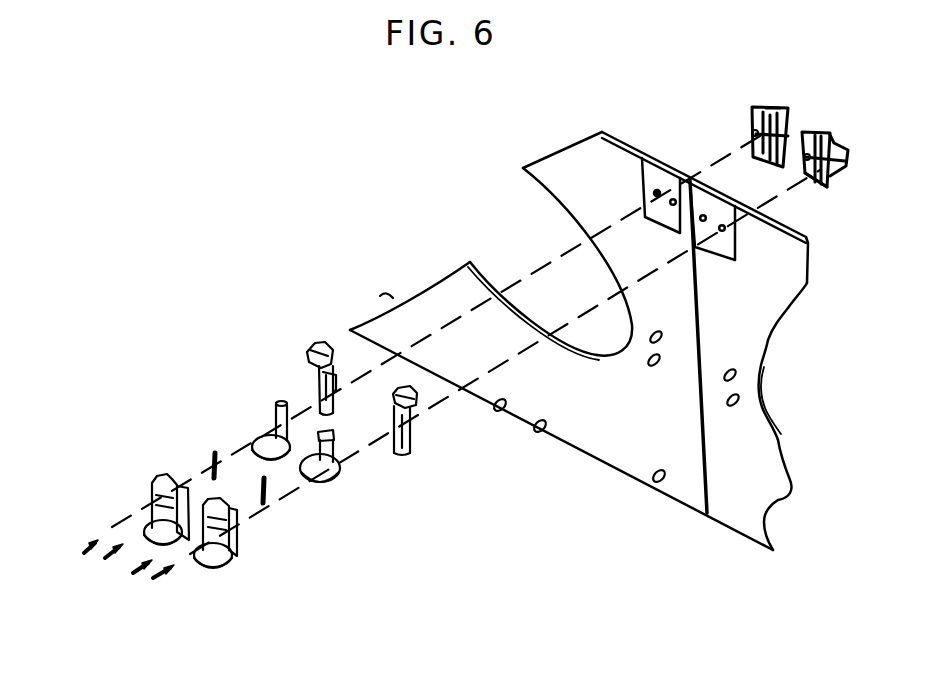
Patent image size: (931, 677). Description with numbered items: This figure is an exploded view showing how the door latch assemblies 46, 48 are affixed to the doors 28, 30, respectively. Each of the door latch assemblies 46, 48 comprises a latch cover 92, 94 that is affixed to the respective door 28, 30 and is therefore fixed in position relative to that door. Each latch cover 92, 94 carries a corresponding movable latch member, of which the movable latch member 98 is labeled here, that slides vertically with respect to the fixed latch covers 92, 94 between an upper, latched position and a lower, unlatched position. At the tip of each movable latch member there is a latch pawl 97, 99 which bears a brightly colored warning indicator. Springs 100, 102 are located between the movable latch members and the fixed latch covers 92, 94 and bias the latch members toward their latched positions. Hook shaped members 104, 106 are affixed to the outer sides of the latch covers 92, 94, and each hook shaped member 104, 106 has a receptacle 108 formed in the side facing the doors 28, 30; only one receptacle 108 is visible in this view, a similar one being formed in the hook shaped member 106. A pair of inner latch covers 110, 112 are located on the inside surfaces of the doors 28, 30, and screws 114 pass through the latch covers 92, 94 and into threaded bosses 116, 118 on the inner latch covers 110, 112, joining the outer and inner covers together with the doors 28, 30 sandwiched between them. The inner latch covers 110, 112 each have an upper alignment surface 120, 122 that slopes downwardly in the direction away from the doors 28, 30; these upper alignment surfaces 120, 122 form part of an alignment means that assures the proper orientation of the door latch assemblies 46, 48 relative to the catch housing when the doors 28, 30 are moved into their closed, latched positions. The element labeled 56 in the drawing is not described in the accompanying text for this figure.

The door 28 is at (573, 167).
The door 30 is at (768, 283).
The door latch assembly 46 is at (173, 367).
The door latch assembly 48 is at (378, 525).
The bolt 56 is at (240, 396).
The latch cover 92 is at (150, 493).
The latch cover 94 is at (230, 550).
The latch pawl 97 is at (273, 405).
The movable latch member 98 is at (370, 476).
The latch pawl 99 is at (334, 440).
The spring 100 is at (203, 460).
The spring 102 is at (268, 498).
The hook shaped member 104 is at (311, 348).
The hook shaped member 106 is at (415, 403).
The receptacle 108 is at (316, 346).
The inner latch cover 110 is at (730, 104).
The inner latch cover 112 is at (836, 185).
The screws 114 is at (153, 578).
The threaded boss 116 is at (750, 137).
The threaded boss 118 is at (811, 185).
The upper alignment surface 120 is at (773, 107).
The upper alignment surface 122 is at (850, 156).